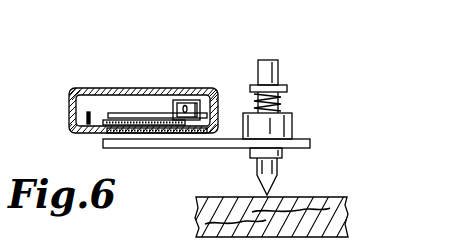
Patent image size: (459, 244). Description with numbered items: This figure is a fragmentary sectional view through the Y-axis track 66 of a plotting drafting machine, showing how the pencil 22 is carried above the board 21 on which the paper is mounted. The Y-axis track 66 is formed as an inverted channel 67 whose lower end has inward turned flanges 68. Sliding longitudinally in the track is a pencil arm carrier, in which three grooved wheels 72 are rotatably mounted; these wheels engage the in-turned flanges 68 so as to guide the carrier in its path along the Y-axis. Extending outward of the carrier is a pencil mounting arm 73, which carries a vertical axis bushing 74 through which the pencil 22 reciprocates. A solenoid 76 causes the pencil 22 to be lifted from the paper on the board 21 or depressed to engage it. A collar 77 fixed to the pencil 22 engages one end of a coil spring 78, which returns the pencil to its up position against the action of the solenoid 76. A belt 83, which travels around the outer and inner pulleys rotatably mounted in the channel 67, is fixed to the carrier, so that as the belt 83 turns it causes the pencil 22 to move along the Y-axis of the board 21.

The board 21 is at (340, 197).
The pencil 22 is at (282, 62).
The Y-axis track 66 is at (144, 80).
The inverted channel 67 is at (128, 89).
The inward turned flanges 68 is at (118, 116).
The grooved wheels 72 is at (162, 148).
The pencil mounting arm 73 is at (211, 150).
The vertical axis bushing 74 is at (288, 154).
The solenoid 76 is at (292, 130).
The collar 77 is at (287, 89).
The coil spring 78 is at (281, 102).
The belt 83 is at (87, 118).